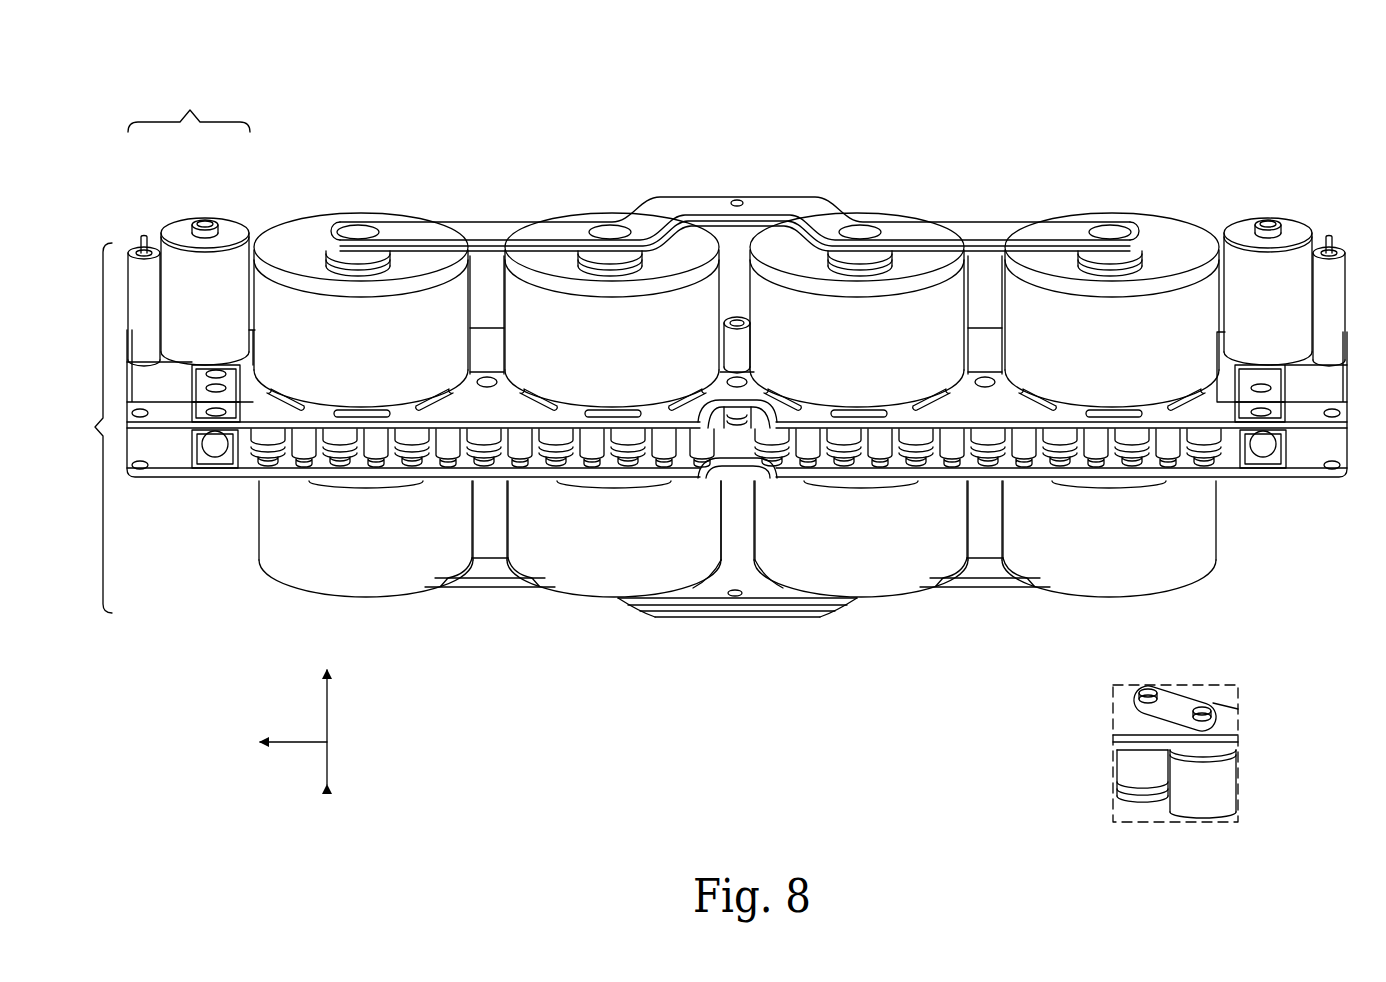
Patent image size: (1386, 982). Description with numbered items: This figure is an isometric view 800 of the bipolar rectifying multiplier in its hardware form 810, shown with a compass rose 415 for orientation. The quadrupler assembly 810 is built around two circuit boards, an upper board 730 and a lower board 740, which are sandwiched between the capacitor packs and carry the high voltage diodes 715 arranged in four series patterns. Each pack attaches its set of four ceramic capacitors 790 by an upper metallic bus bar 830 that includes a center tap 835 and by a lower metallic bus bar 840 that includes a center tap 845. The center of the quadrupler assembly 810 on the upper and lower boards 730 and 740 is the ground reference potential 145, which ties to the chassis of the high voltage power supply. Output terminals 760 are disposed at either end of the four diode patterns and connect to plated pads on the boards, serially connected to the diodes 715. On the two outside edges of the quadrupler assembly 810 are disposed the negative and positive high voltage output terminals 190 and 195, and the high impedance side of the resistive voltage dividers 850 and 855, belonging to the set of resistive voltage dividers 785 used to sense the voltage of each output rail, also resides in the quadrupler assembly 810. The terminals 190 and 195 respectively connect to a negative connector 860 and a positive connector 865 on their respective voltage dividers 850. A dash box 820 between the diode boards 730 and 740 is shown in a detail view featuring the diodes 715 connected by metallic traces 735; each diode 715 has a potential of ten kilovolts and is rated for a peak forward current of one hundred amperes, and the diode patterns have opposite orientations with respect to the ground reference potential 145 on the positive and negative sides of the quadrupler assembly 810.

The isometric view 800 is at (1075, 115).
The hardware form 810 is at (74, 428).
The set of resistive voltage dividers 785 is at (189, 104).
The resistive voltage divider 850 is at (240, 230).
The resistive voltage divider 855 is at (142, 250).
The negative connector 860 is at (207, 224).
The positive connector 865 is at (1269, 224).
The upper board 730 is at (480, 340).
The center tap 835 is at (734, 199).
The ground reference potential 145 is at (739, 320).
The upper metallic bus bar 830 is at (985, 225).
The ceramic capacitor 790 is at (1167, 230).
The negative high voltage output terminal 190 is at (215, 450).
The positive high voltage output terminal 195 is at (1265, 450).
The output terminal 760 is at (145, 483).
The lower board 740 is at (1310, 483).
The axial diode 715 is at (518, 458).
The lower metallic bus bar 840 is at (640, 614).
The center tap 845 is at (733, 597).
The copper trace 735 is at (1192, 700).
The detail region 820 is at (1110, 702).
The compass rose 415 is at (282, 735).